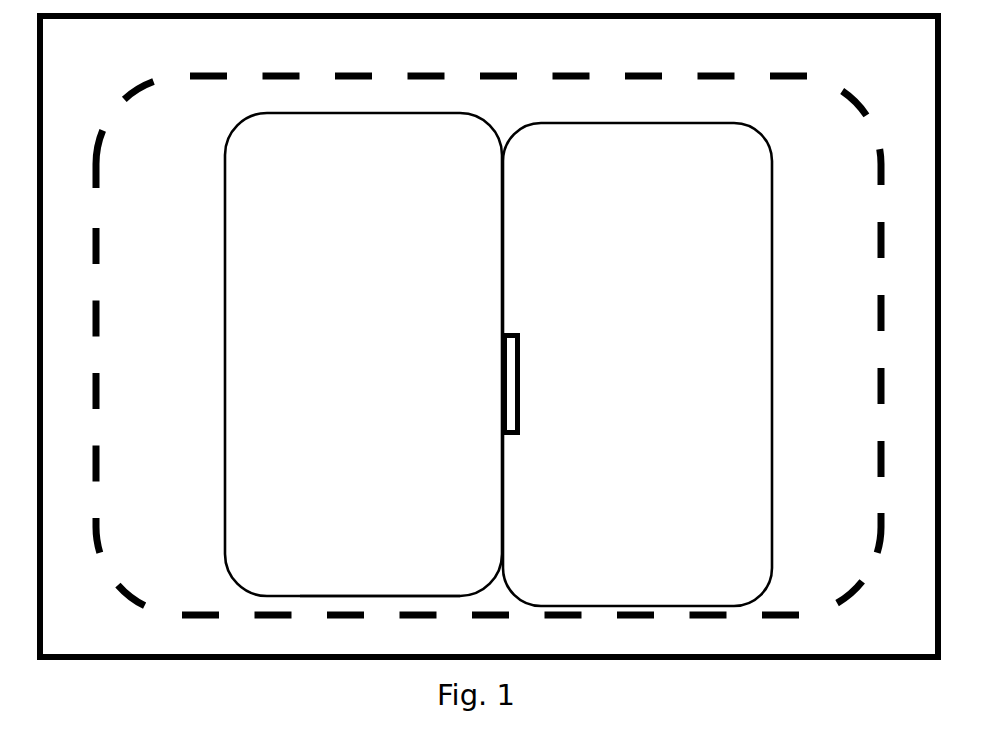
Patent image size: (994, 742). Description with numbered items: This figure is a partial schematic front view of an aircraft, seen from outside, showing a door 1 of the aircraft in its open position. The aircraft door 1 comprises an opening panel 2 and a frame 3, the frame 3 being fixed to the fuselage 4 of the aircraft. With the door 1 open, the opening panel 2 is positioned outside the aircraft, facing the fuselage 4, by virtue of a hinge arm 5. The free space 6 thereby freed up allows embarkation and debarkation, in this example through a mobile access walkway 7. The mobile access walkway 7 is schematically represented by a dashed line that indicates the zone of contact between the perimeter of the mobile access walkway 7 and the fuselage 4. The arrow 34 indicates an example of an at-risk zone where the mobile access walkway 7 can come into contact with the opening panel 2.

The door 1 is at (469, 403).
The opening panel 2 is at (340, 405).
The frame 3 is at (659, 364).
The fuselage 4 is at (878, 605).
The hinge arm 5 is at (510, 395).
The free space 6 is at (665, 362).
The mobile access walkway 7 is at (356, 73).
The arrow 34 is at (338, 636).